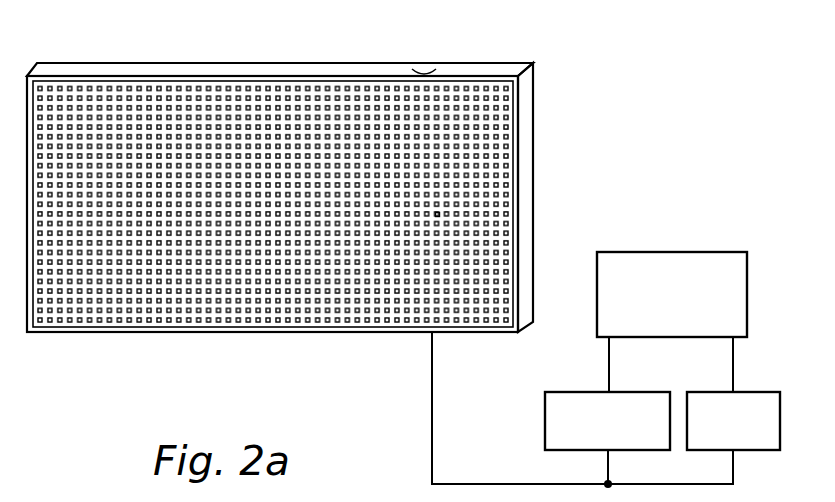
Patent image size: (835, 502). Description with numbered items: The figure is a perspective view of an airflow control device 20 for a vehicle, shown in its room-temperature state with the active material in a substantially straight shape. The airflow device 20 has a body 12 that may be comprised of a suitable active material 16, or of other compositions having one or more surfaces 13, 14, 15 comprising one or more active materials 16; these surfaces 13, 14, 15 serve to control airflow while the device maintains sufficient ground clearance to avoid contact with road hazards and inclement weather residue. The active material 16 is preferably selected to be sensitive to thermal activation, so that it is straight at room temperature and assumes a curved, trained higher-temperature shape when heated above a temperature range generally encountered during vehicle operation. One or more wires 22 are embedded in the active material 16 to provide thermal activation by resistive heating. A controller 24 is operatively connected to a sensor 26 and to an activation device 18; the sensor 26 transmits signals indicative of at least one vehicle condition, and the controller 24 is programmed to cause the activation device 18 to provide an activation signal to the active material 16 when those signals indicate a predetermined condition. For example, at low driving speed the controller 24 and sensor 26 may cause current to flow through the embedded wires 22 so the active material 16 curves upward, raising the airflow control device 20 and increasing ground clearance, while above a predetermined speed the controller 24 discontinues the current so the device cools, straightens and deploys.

The body 12 is at (528, 157).
The surface 13 is at (103, 63).
The surface 14 is at (441, 214).
The surface 15 is at (423, 66).
The active material 16 is at (157, 332).
The activation device 18 is at (582, 392).
The airflow control device 20 is at (602, 92).
The wires 22 is at (271, 283).
The controller 24 is at (666, 252).
The sensor 26 is at (718, 392).